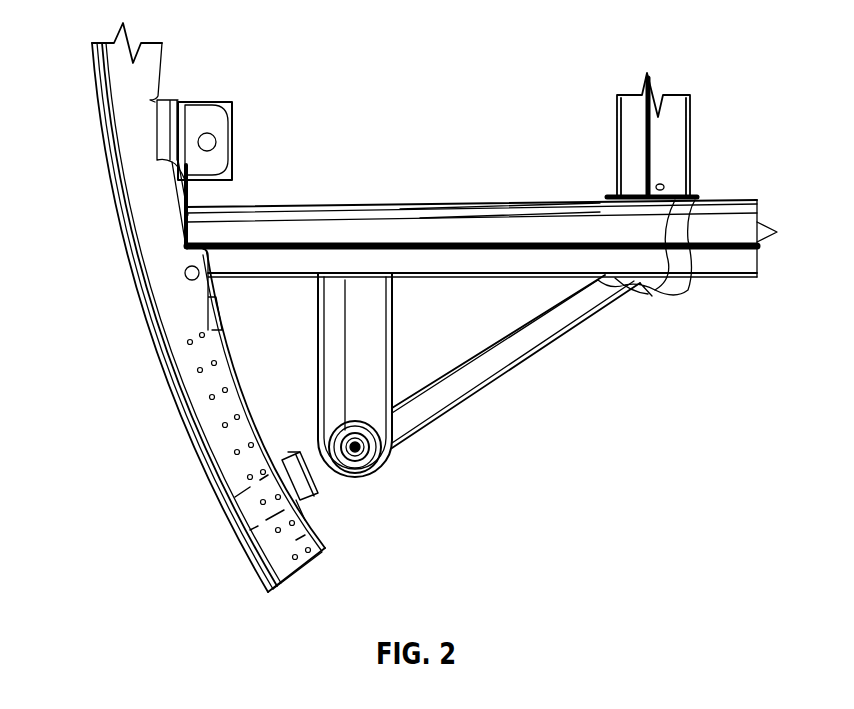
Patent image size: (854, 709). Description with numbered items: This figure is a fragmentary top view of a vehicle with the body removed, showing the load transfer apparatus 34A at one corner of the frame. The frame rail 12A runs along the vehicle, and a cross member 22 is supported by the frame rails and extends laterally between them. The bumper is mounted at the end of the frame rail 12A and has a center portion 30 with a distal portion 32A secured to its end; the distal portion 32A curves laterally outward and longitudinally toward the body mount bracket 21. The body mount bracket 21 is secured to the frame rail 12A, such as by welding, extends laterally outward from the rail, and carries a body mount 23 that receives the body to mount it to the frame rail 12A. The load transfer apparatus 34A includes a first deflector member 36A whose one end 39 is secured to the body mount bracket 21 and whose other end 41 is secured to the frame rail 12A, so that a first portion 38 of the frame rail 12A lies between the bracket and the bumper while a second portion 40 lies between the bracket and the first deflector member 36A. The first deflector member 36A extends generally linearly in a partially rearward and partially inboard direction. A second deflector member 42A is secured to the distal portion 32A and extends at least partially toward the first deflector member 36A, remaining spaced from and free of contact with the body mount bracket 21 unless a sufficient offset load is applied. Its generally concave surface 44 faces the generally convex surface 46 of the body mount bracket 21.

The center portion 30 is at (95, 102).
The distal portion 32A is at (178, 416).
The first portion 38 is at (262, 207).
The second portion 40 is at (497, 200).
The frame rail 12A is at (553, 226).
The cross member 22 is at (692, 167).
The body mount bracket 21 is at (318, 312).
The one end 39 is at (387, 408).
The body mount 23 is at (362, 448).
The first deflector member 36A is at (540, 366).
The other end 41 is at (635, 290).
The concave surface 44 is at (314, 478).
The second deflector member 42A is at (303, 503).
The convex surface 46 is at (318, 455).
The load transfer apparatus 34A is at (432, 510).